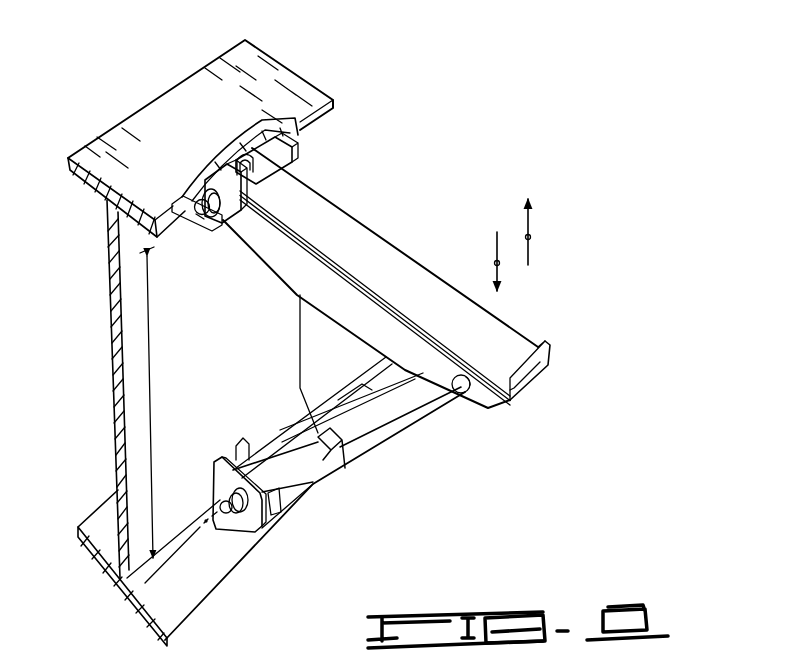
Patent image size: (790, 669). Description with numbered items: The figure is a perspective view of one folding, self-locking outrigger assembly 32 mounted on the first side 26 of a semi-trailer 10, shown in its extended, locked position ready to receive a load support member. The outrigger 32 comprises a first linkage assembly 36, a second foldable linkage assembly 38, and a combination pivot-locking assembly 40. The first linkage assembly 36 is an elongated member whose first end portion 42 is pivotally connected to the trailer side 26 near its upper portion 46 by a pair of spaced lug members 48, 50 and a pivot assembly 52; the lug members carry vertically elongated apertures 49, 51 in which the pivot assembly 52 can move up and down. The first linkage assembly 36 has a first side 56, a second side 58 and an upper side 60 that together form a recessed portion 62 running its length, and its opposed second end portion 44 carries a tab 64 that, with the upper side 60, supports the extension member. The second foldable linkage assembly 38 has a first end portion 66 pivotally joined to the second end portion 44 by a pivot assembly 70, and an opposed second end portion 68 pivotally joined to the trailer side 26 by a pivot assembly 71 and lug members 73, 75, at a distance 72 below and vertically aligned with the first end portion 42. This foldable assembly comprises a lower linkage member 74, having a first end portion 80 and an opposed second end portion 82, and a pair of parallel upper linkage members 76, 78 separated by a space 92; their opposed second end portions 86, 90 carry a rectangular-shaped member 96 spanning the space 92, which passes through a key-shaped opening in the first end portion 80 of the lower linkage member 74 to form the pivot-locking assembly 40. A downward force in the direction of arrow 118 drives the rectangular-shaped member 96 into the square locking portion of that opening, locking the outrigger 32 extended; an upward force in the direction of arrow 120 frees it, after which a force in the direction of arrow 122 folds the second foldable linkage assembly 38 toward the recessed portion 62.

The semi-trailer 10 is at (372, 68).
The first side 26 is at (237, 325).
The folding, self-locking outrigger assembly 32 is at (437, 233).
The first linkage assembly 36 is at (383, 231).
The second foldable linkage assembly 38 is at (312, 488).
The combination pivot-locking assembly 40 is at (326, 464).
The first end portion 42 is at (302, 197).
The opposed second end portion 44 is at (492, 335).
The upper portion 46 is at (128, 279).
The lug member 48 is at (194, 203).
The elongated aperture 49 is at (213, 168).
The lug member 50 is at (292, 160).
The elongated aperture 51 is at (275, 141).
The pivot assembly 52 is at (202, 219).
The first side 56 is at (342, 305).
The second side 58 is at (455, 291).
The upper side 60 is at (392, 278).
The recessed portion 62 is at (527, 388).
The tab 64 is at (547, 355).
The first end portion 66 is at (437, 397).
The opposed second end portion 68 is at (233, 459).
The pivot assembly 70 is at (463, 392).
The pivot assembly 71 is at (220, 522).
The distance 72 is at (152, 393).
The lug member 73 is at (247, 540).
The lower linkage member 74 is at (278, 447).
The lug member 75 is at (277, 510).
The upper linkage member 76 is at (300, 374).
The upper linkage member 78 is at (409, 366).
The first end portion 80 is at (362, 382).
The opposed second end portion 82 is at (270, 498).
The opposed second end portion 86 is at (313, 438).
The opposed second end portion 90 is at (347, 392).
The space 92 is at (383, 373).
The rectangular-shaped member 96 is at (270, 437).
The arrow 118 is at (499, 264).
The arrow 120 is at (530, 238).
The arrow 122 is at (385, 497).